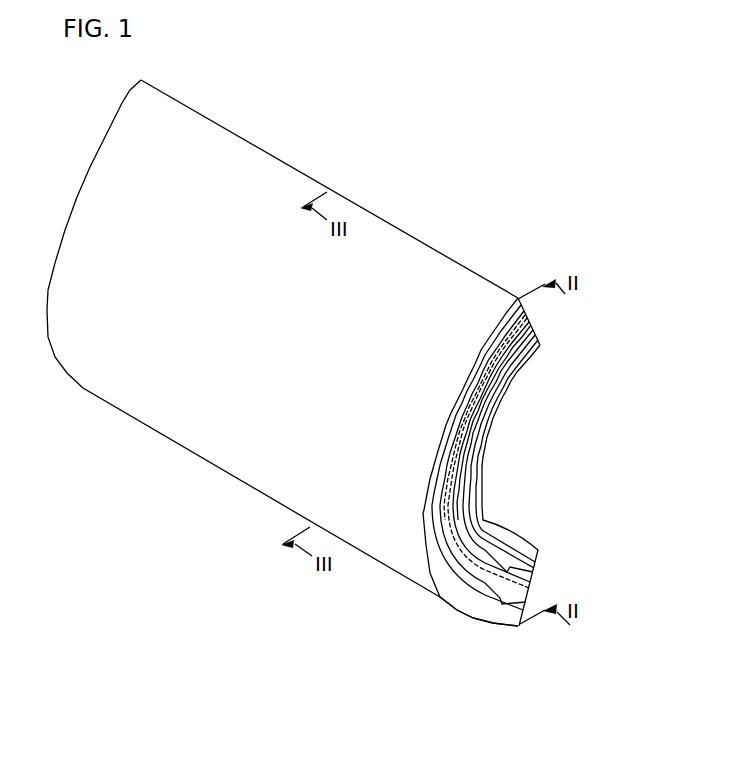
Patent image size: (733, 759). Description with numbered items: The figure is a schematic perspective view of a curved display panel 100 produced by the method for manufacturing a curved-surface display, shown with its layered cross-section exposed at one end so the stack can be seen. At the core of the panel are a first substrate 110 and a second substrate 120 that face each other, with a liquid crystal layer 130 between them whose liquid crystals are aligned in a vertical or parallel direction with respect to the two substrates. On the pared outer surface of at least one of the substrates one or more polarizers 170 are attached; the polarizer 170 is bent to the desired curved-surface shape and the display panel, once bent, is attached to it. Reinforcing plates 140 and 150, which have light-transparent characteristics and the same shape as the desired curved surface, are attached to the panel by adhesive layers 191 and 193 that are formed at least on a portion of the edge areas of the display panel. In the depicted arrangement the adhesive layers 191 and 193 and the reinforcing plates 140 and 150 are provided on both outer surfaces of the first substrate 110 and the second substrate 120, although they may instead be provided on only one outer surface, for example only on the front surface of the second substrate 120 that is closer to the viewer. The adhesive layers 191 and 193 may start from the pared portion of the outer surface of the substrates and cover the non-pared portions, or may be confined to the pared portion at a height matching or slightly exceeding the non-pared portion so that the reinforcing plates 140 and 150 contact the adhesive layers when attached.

The curved display panel 100 is at (80, 101).
The first substrate 110 is at (527, 572).
The second substrate 120 is at (507, 320).
The liquid crystal layer 130 is at (510, 342).
The reinforcing plate 140 is at (538, 560).
The reinforcing plate 150 is at (507, 618).
The polarizer 170 is at (465, 398).
The adhesive layer 191 is at (480, 442).
The adhesive layer 193 is at (440, 490).